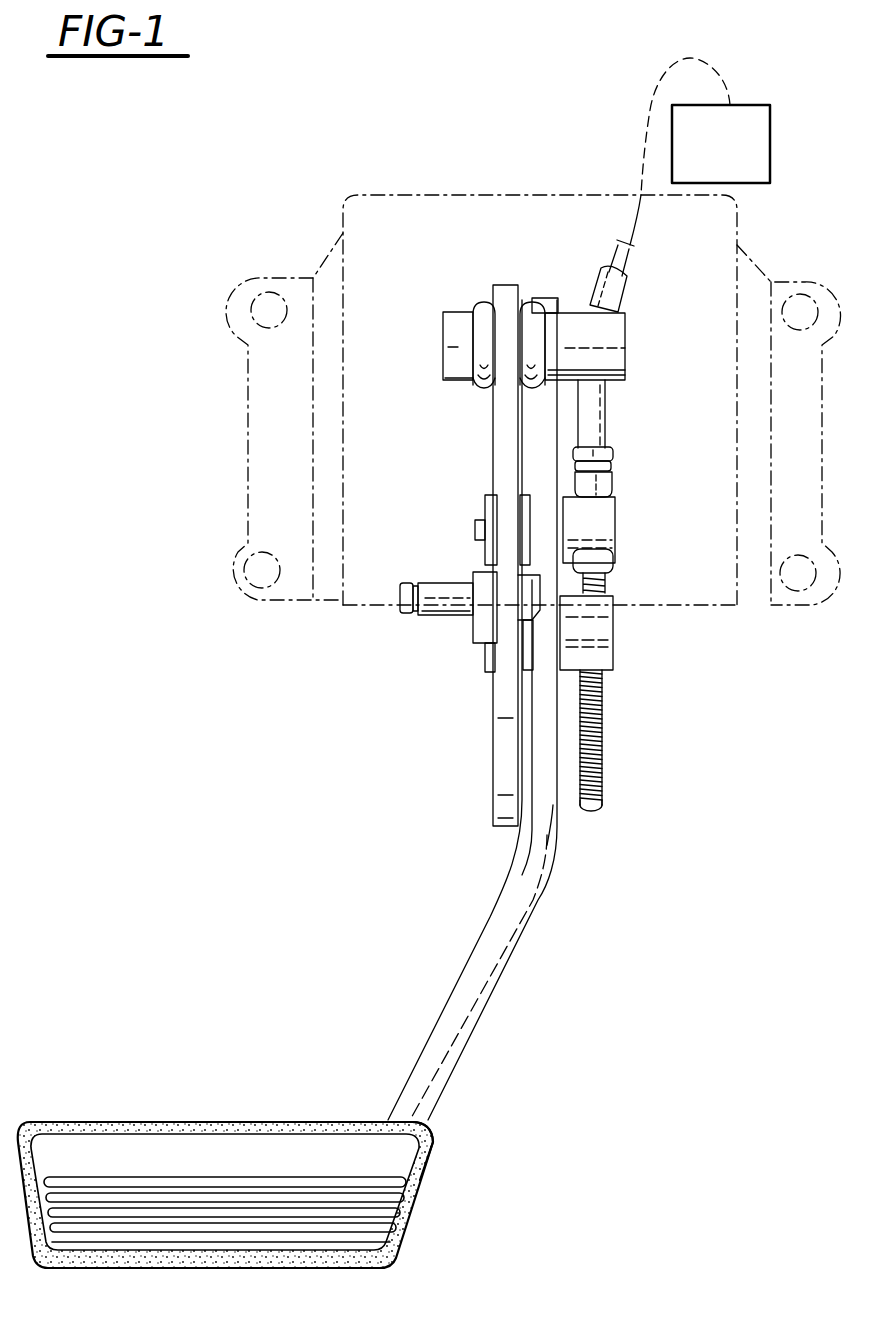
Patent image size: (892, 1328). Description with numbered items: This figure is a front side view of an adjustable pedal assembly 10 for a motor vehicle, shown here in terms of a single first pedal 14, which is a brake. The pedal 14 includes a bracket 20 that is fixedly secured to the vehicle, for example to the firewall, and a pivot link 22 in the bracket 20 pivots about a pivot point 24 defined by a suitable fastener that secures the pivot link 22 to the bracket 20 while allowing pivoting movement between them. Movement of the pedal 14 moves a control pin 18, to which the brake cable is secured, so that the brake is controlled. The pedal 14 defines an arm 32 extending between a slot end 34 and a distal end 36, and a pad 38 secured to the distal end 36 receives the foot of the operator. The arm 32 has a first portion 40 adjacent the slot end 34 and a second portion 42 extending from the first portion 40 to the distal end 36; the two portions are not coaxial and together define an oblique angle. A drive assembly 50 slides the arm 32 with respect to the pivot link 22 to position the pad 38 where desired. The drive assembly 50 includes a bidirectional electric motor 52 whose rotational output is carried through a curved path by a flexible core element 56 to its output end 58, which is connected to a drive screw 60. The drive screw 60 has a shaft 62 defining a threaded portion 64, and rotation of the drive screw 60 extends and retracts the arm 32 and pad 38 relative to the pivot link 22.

The adjustable pedal assembly 10 is at (360, 708).
The first pedal 14 is at (484, 710).
The control pin 18 is at (446, 590).
The bracket 20 is at (342, 220).
The pivot link 22 is at (506, 297).
The pivot point 24 is at (626, 345).
The arm 32 is at (440, 1015).
The slot end 34 is at (547, 298).
The distal end 36 is at (447, 1130).
The pad 38 is at (203, 1128).
The first portion 40 is at (553, 413).
The second portion 42 is at (497, 995).
The drive assembly 50 is at (630, 161).
The motor 52 is at (756, 104).
The flexible core element 56 is at (628, 265).
The output end 58 is at (607, 433).
The drive screw 60 is at (603, 723).
The shaft 62 is at (603, 688).
The threaded portion 64 is at (603, 790).